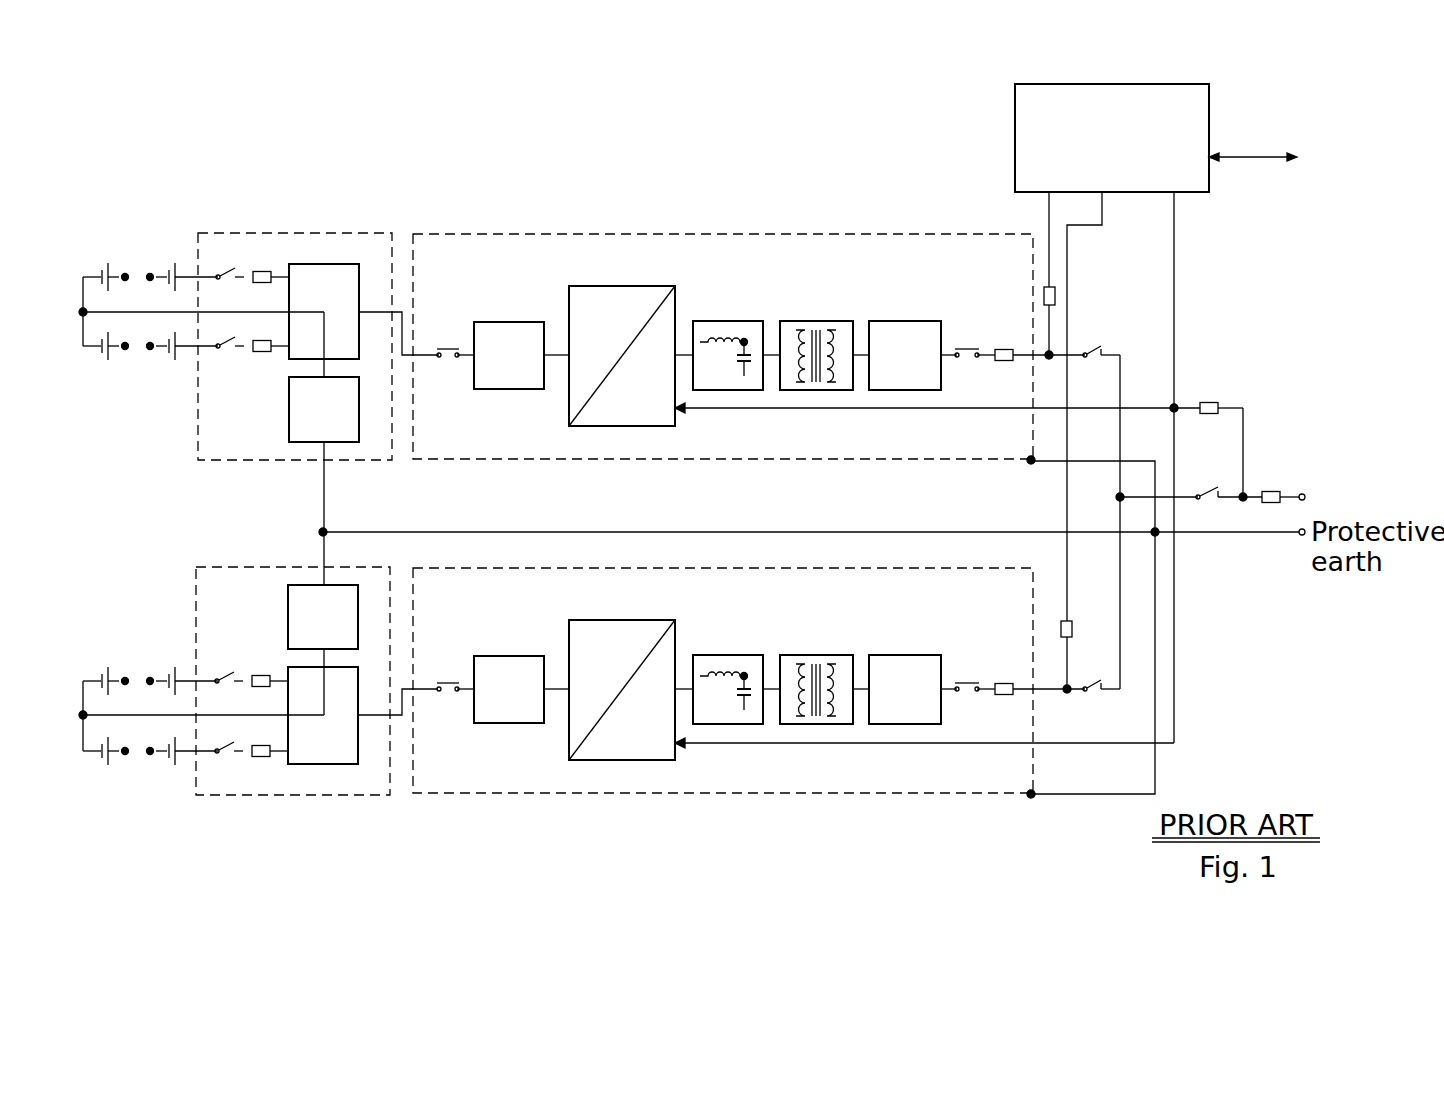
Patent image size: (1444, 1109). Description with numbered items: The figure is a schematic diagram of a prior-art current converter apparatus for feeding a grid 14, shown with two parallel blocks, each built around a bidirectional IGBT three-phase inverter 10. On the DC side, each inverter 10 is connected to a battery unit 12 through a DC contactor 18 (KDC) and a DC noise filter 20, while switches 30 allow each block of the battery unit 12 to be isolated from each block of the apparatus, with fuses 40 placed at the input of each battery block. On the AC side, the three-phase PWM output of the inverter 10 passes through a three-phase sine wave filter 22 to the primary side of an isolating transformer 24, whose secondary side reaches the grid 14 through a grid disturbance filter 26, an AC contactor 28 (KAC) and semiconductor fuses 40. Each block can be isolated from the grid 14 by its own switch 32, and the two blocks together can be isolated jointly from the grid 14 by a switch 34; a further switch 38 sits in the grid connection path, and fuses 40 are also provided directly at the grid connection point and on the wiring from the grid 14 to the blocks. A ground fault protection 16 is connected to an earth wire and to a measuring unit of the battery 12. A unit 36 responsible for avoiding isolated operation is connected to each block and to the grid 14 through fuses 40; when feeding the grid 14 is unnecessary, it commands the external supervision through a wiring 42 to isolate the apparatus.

The inverter 10 is at (620, 427).
The battery unit 12 is at (133, 256).
The grid 14 is at (1305, 492).
The ground fault protection 16 is at (338, 443).
The DC contactor 18 is at (447, 358).
The DC noise filter 20 is at (505, 390).
The three-phase sine wave filter 22 is at (720, 391).
The isolating transformer 24 is at (805, 391).
The grid disturbance filter 26 is at (900, 391).
The AC contactor 28 is at (970, 358).
The switches 30 is at (232, 336).
The switches 32 is at (1094, 347).
The switch 34 is at (1245, 456).
The unit responsible for avoiding isolated operation 36 is at (1209, 108).
The grid disconnect switch 38 is at (1208, 490).
The fuses 40 is at (262, 272).
The wiring 42 is at (1232, 157).